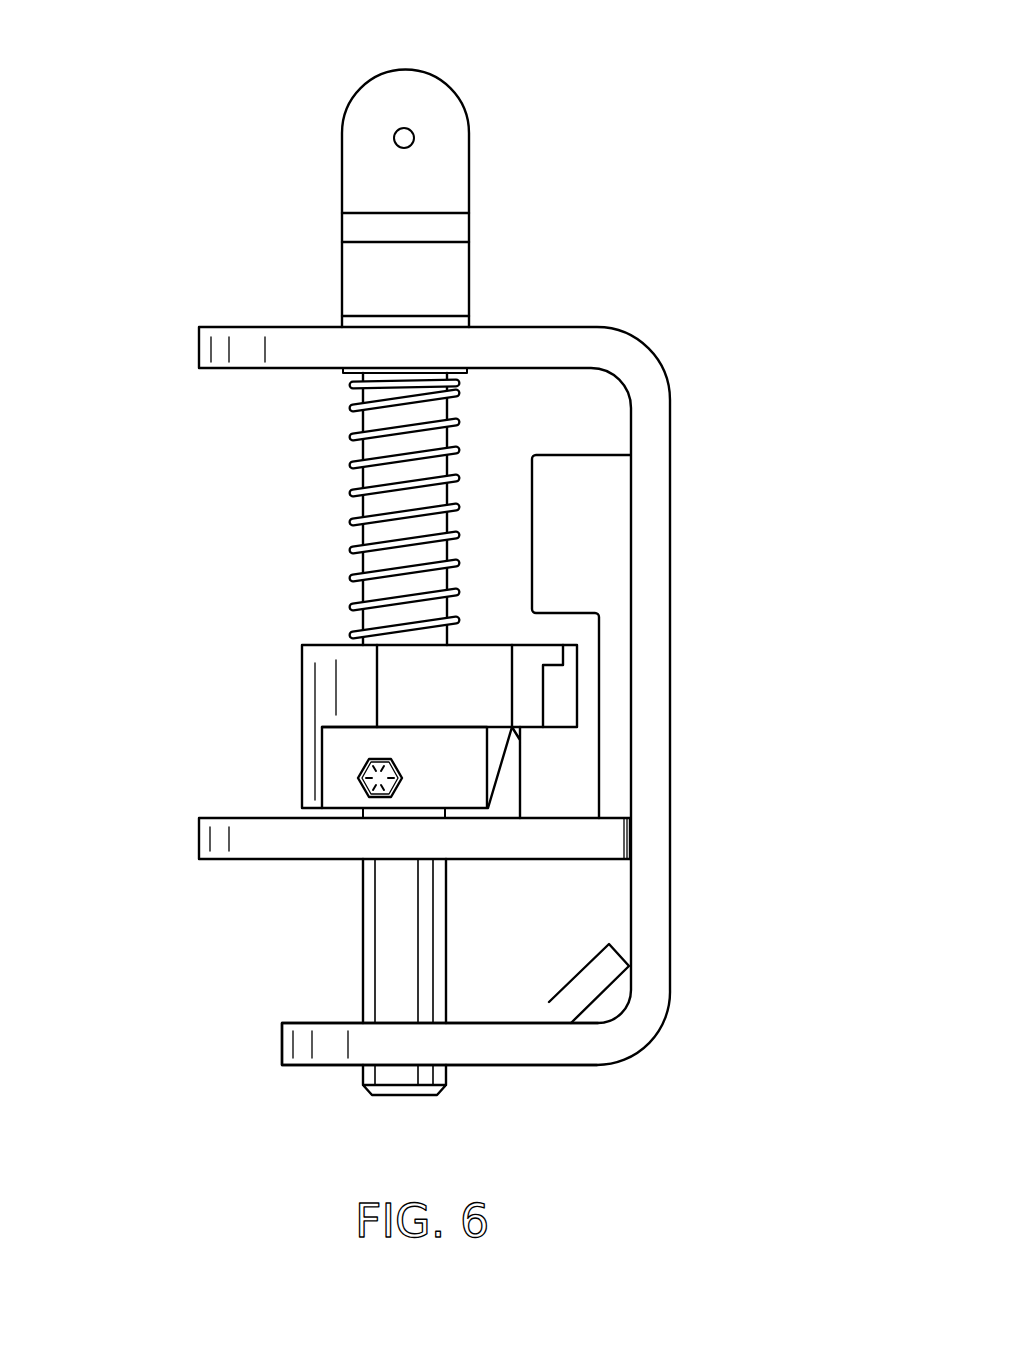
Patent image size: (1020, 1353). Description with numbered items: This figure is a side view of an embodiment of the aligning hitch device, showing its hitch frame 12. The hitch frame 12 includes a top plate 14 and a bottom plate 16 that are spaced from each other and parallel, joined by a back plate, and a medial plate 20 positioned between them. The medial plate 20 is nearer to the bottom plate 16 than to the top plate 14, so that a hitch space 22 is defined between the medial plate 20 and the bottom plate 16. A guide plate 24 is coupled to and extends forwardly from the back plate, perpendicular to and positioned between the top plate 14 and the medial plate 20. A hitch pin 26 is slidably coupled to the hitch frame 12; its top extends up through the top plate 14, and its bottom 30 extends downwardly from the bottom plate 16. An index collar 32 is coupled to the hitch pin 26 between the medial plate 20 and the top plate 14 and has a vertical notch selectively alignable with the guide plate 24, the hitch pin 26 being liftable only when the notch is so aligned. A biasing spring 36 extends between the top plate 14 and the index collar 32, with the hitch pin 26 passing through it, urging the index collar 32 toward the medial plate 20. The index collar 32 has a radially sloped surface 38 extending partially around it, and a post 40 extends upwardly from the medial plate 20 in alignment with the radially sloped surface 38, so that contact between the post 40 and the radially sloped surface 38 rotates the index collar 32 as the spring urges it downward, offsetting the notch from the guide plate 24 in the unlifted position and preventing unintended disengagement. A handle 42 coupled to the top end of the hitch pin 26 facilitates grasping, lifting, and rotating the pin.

The hitch frame 12 is at (505, 699).
The top plate 14 is at (520, 332).
The bottom plate 16 is at (292, 1047).
The medial plate 20 is at (225, 832).
The hitch space 22 is at (303, 943).
The guide plate 24 is at (567, 537).
The hitch pin 26 is at (380, 556).
The bottom of the hitch pin 30 is at (412, 1093).
The index collar 32 is at (315, 680).
The biasing spring 36 is at (352, 497).
The radially sloped surface 38 is at (503, 763).
The post 40 is at (508, 793).
The handle 42 is at (433, 78).